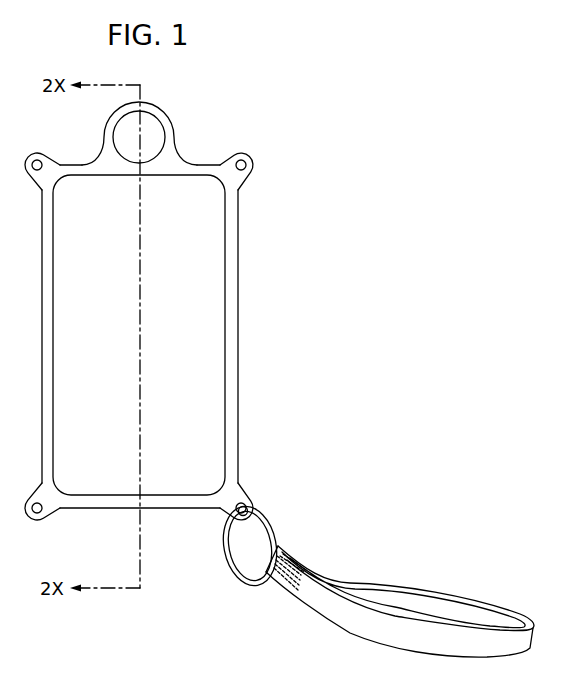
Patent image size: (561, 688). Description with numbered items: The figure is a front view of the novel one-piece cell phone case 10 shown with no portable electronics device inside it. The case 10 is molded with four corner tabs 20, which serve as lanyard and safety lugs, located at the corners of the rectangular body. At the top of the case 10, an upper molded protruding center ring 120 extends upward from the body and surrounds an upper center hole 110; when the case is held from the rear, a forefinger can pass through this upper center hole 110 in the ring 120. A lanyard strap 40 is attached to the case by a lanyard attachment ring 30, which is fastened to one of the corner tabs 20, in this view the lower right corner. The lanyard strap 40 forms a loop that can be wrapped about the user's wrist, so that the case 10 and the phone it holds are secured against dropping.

The cell phone case 10 is at (203, 133).
The lanyard/safety lug corners 20 is at (34, 152).
The lanyard attachment ring 30 is at (242, 570).
The lanyard strap 40 is at (363, 630).
The upper center hole 110 is at (152, 115).
The protruding upper center ring 120 is at (139, 104).